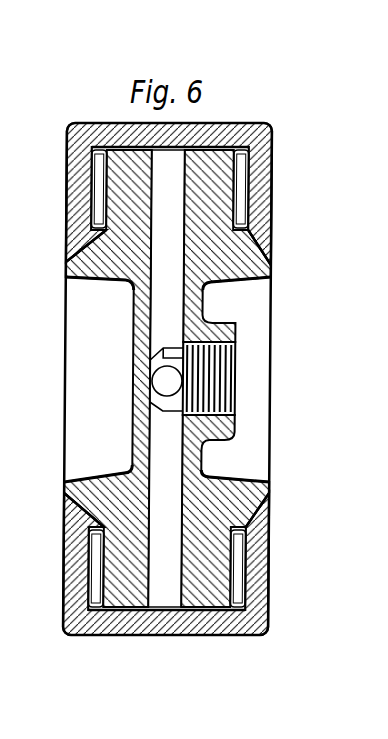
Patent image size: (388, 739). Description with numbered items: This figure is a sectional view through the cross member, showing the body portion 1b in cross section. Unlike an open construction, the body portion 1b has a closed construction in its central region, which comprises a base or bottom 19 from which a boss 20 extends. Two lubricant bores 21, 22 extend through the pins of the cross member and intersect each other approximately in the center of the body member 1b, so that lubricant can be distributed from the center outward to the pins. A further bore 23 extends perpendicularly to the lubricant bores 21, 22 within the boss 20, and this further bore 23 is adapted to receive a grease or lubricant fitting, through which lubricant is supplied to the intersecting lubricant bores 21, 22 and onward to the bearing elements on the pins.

The body portion 1b is at (237, 305).
The base or bottom 19 is at (145, 356).
The boss 20 is at (223, 431).
The lubricant bore 21 is at (177, 180).
The lubricant bore 22 is at (163, 382).
The further bore 23 is at (222, 386).